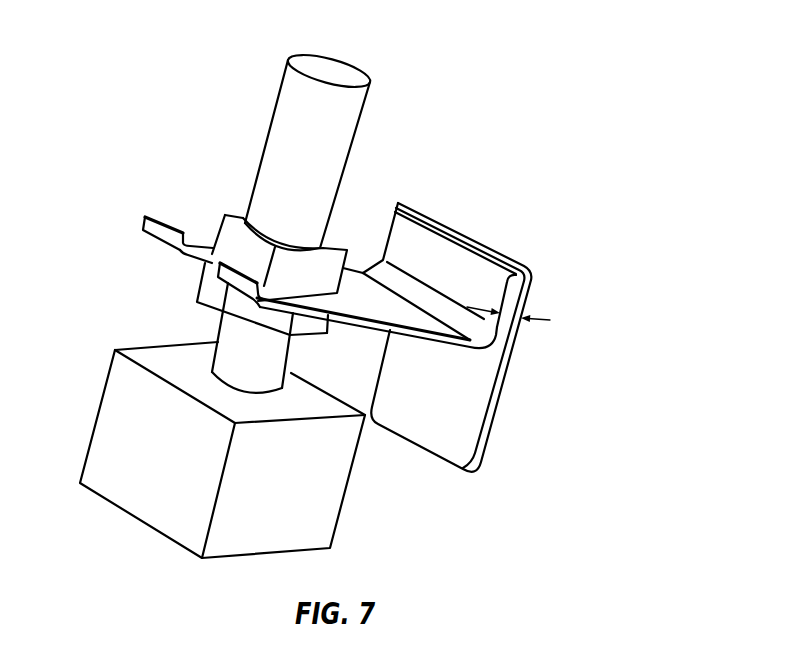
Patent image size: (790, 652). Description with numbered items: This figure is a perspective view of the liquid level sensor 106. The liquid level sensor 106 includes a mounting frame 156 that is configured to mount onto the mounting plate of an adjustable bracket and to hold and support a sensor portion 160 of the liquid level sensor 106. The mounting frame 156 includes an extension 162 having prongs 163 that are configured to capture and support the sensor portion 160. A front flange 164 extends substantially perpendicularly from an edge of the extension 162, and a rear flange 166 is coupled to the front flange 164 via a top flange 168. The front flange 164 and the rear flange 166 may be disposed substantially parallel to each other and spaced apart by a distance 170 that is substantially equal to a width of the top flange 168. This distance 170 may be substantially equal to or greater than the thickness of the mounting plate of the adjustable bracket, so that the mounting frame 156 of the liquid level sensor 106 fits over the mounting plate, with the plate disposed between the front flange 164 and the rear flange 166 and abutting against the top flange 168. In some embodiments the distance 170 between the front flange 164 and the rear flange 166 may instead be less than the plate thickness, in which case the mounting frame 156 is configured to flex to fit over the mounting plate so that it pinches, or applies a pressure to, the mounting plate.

The liquid level sensor 106 is at (461, 46).
The mounting frame 156 is at (334, 347).
The sensor portion 160 is at (221, 314).
The extension 162 is at (363, 307).
The prongs 163 is at (158, 224).
The front flange 164 is at (481, 279).
The rear flange 166 is at (443, 451).
The top flange 168 is at (496, 252).
The distance 170 is at (541, 321).